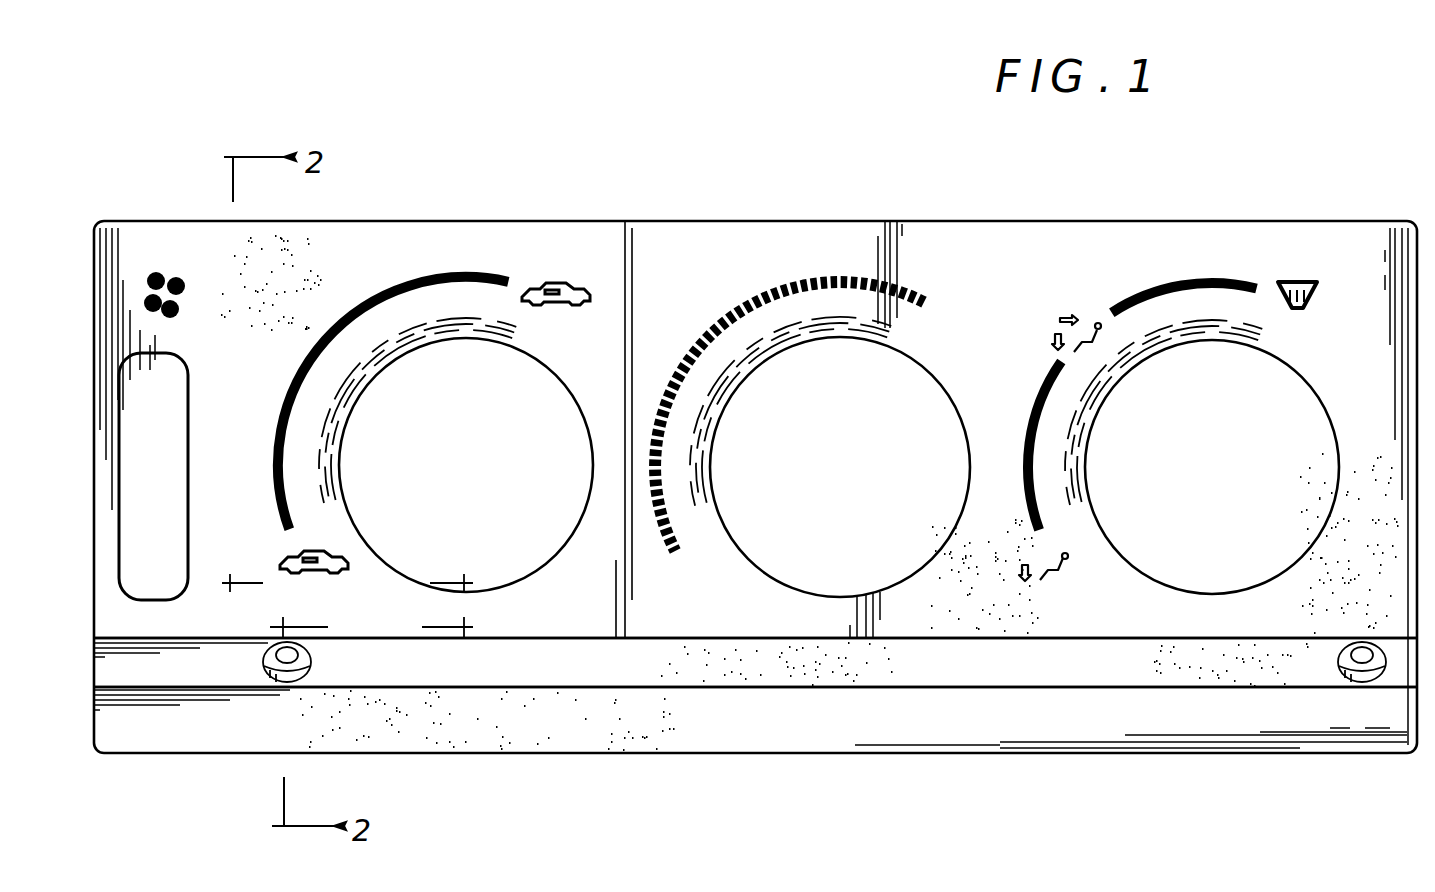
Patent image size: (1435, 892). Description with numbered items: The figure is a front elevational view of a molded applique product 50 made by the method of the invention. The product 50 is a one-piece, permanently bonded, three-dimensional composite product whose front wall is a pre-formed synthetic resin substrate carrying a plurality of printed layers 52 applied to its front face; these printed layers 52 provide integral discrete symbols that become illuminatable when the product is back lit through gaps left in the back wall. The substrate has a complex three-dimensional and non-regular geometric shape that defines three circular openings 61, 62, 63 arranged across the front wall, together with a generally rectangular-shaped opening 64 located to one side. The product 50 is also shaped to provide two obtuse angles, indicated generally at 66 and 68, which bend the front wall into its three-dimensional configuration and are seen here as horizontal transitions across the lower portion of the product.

The molded applique product 50 is at (755, 449).
The printed layers 52 is at (1022, 294).
The circular opening 61 is at (338, 470).
The circular opening 62 is at (710, 475).
The circular opening 63 is at (1085, 476).
The generally rectangular-shaped opening 64 is at (148, 466).
The obtuse angle 66 is at (1055, 637).
The obtuse angle 68 is at (1022, 689).